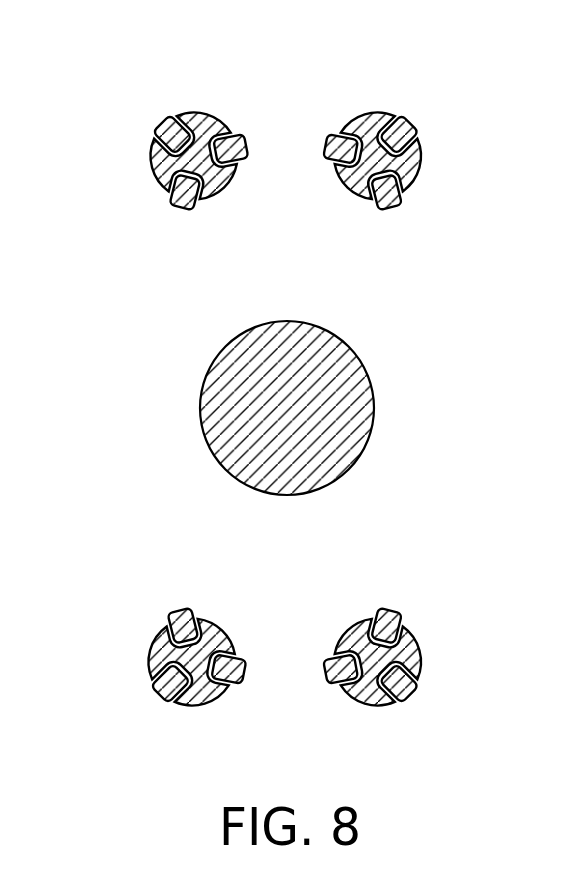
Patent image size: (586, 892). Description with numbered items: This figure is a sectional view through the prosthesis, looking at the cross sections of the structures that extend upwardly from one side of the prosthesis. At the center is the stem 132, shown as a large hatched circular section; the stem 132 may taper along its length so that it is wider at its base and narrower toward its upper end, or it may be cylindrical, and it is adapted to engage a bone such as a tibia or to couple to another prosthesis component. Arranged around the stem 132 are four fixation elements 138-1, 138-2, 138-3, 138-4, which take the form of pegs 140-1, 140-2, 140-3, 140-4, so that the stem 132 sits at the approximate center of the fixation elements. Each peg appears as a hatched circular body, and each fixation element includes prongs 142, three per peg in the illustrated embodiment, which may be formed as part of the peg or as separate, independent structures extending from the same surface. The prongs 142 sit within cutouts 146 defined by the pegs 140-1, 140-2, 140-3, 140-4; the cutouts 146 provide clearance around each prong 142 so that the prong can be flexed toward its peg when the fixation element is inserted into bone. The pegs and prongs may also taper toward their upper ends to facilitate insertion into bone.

The stem 132 is at (362, 424).
The fixation element 138-1 is at (153, 667).
The fixation element 138-2 is at (429, 693).
The fixation element 138-3 is at (146, 116).
The fixation element 138-4 is at (404, 116).
The peg 140-1 is at (153, 635).
The peg 140-2 is at (421, 657).
The peg 140-3 is at (152, 164).
The peg 140-4 is at (419, 164).
The prong 142 is at (184, 608).
The cutout 146 is at (224, 626).